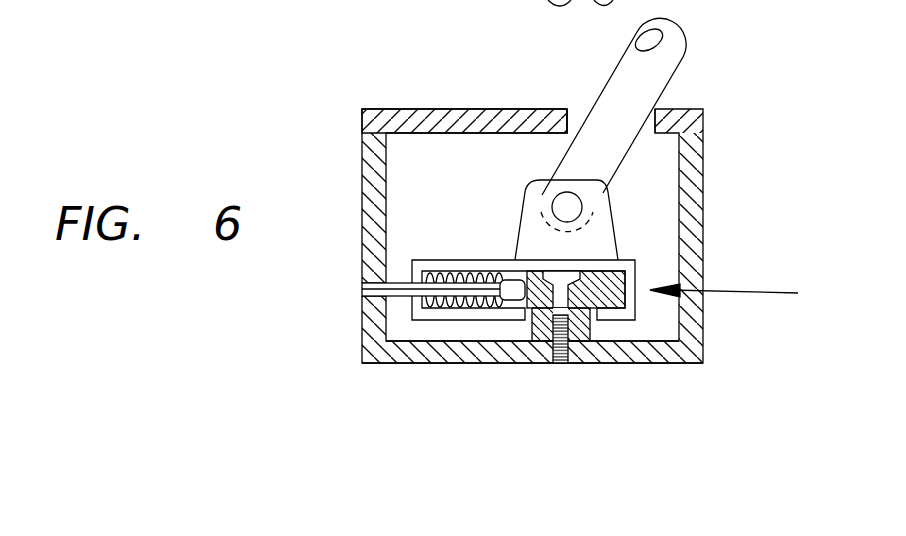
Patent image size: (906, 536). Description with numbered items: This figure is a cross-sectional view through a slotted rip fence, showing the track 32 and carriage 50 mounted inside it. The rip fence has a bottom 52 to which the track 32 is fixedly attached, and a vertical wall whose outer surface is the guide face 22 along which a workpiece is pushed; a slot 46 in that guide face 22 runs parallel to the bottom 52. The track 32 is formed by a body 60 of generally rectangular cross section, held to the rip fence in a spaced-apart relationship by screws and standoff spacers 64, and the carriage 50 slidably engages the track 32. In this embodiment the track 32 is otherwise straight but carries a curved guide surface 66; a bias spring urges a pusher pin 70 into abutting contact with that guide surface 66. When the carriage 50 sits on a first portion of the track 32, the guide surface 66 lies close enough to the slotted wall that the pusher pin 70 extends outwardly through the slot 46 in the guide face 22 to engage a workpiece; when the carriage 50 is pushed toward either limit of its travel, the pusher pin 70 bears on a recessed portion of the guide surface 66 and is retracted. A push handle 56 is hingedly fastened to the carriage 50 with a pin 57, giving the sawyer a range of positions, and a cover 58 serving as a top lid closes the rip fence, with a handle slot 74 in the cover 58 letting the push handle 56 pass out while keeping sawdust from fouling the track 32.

The guide face 22 is at (512, 219).
The track 32 is at (746, 298).
The slot 46 is at (362, 298).
The carriage 50 is at (425, 320).
The bottom 52 is at (660, 363).
The push handle 56 is at (660, 72).
The pin 57 is at (532, 72).
The cover 58 is at (378, 118).
The body 60 is at (607, 290).
The standoff spacer 64 is at (582, 330).
The guide surface 66 is at (513, 300).
The pusher pin 70 is at (368, 285).
The handle slot 74 is at (573, 112).